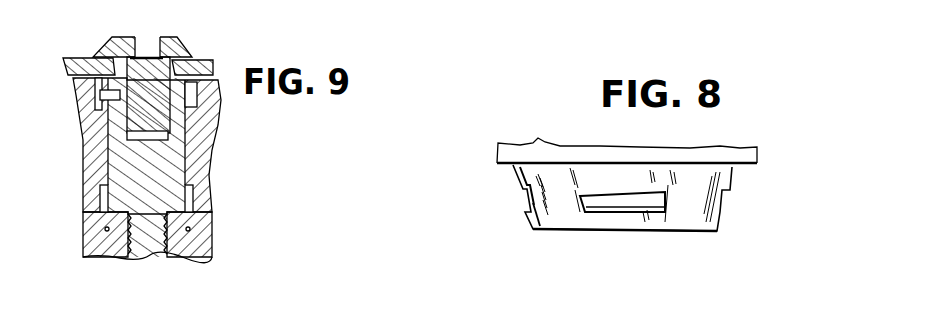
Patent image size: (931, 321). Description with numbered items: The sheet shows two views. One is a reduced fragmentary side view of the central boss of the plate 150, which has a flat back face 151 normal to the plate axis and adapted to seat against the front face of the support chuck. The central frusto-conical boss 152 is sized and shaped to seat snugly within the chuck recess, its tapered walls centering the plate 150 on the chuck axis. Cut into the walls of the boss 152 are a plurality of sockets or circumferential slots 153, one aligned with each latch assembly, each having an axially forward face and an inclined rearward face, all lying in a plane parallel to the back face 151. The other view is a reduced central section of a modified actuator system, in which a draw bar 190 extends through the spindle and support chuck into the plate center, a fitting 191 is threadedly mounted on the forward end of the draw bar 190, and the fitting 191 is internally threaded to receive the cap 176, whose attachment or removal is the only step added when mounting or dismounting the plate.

In FIG. 9, the cap 176 is at (156, 37).
In FIG. 9, the fitting 191 is at (165, 168).
In FIG. 9, the draw bar 190 is at (168, 257).
In FIG. 8, the plate 150 is at (766, 156).
In FIG. 8, the flat back face 151 is at (510, 172).
In FIG. 8, the central frusto-conical boss 152 is at (563, 238).
In FIG. 8, the circumferential slots 153 is at (618, 210).